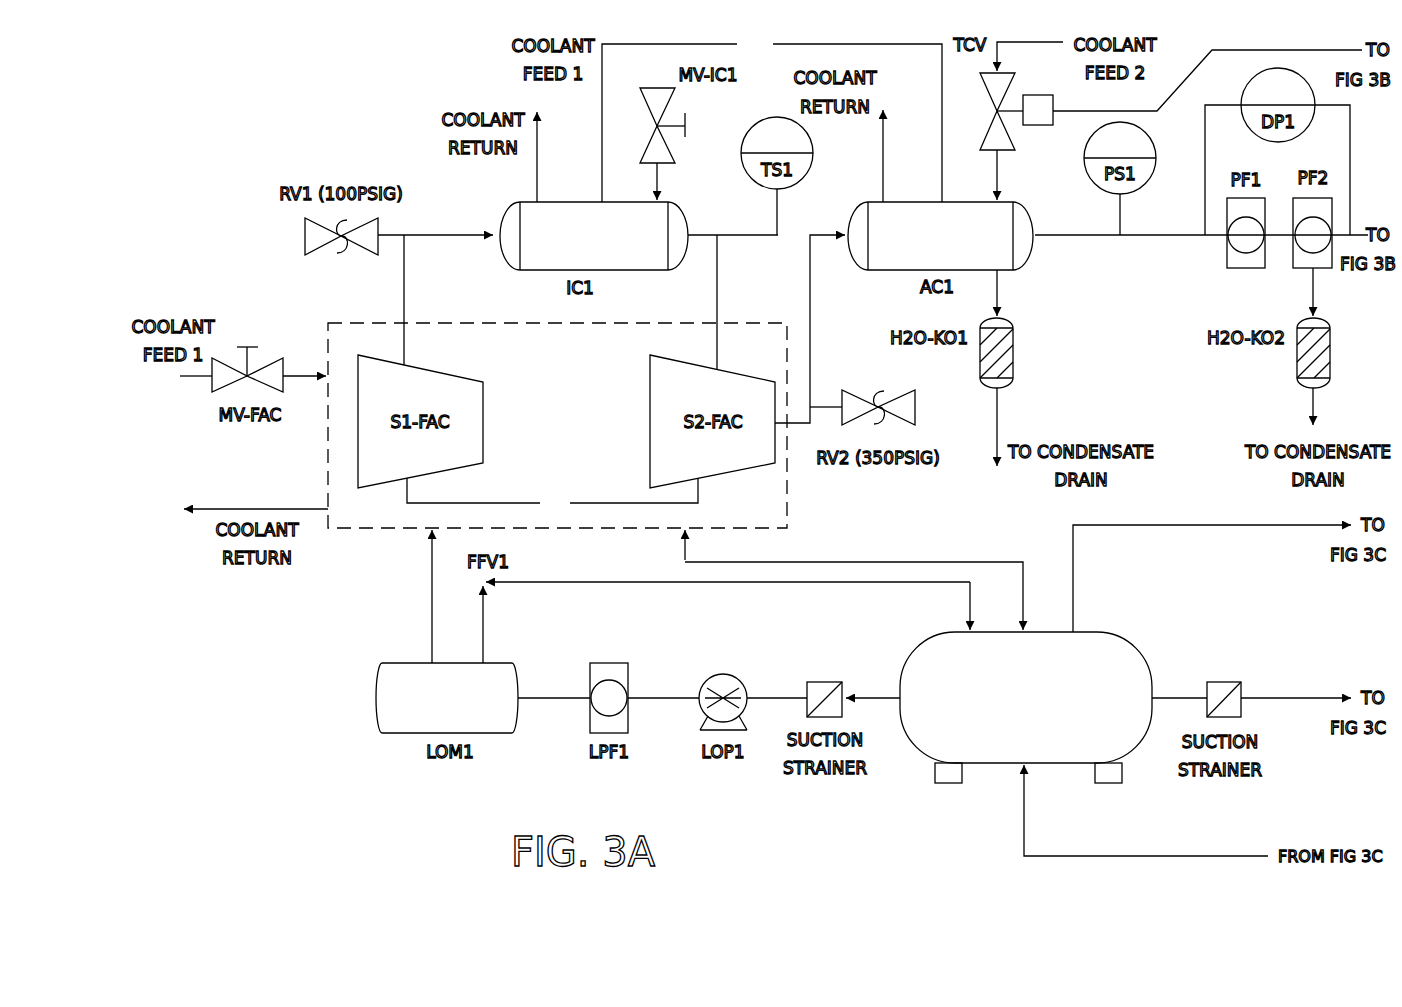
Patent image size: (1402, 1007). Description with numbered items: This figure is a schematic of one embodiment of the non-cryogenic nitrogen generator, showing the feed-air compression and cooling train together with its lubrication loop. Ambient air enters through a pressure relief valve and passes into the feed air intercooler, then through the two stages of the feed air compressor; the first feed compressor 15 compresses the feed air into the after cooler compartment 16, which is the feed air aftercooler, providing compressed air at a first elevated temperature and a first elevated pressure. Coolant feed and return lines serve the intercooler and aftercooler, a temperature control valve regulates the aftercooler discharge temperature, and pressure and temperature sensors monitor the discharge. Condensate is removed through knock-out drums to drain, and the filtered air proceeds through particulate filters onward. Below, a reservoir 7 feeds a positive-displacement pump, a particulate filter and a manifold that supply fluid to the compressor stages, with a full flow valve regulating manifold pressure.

The after cooler compartment 16 is at (772, 118).
The first feed compressor 15 is at (552, 495).
The hydraulic fluid reservoir 7 is at (1107, 633).